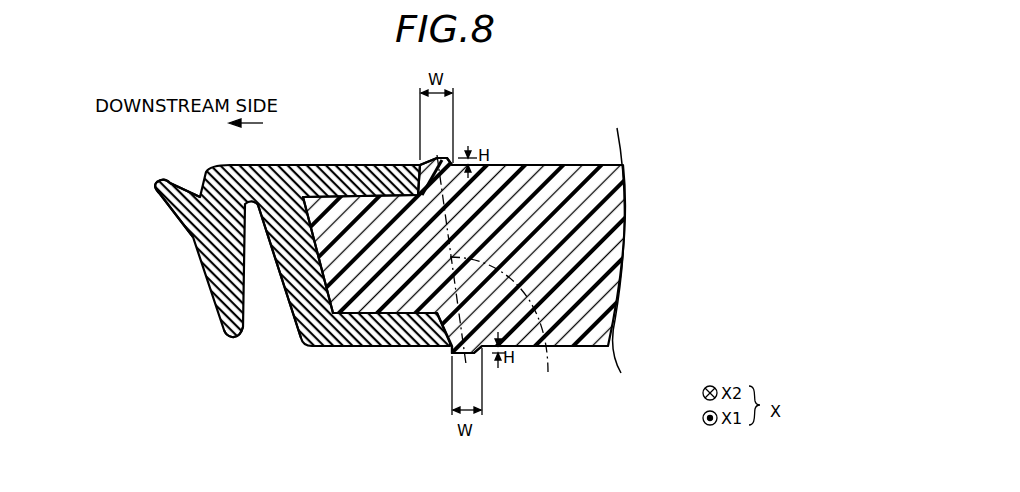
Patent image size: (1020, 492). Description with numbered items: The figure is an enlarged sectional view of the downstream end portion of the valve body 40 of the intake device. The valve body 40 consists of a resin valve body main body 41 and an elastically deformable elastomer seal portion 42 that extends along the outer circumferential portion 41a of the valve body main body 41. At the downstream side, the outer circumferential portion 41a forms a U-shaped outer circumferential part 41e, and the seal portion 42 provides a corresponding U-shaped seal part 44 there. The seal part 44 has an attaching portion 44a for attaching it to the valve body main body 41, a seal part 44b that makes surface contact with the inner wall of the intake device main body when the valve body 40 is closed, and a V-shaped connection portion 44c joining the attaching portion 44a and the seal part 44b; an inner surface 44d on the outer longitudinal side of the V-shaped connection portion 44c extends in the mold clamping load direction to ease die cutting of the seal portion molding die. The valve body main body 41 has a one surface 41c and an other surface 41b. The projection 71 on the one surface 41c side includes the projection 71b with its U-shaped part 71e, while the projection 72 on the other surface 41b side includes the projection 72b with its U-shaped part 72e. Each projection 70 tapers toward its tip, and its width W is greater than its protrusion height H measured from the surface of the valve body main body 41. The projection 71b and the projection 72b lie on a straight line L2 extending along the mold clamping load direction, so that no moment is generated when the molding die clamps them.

The valve body 40 is at (592, 124).
The valve body main body 41 is at (464, 240).
The outer circumferential portion 41a is at (325, 340).
The other surface 41b is at (597, 348).
The one surface 41c is at (528, 165).
The U-shaped outer circumferential part 41e is at (372, 369).
The seal portion 42 is at (325, 148).
The seal part 44 is at (285, 240).
The attaching portion 44a is at (348, 160).
The seal part 44b is at (168, 200).
The V-shaped connection portion 44c is at (277, 328).
The inner surface 44d is at (256, 320).
The projection 70 is at (407, 105).
The projection 71 is at (407, 105).
The projection 71b is at (407, 105).
The U-shaped part 71e is at (418, 160).
The projection 72 is at (393, 390).
The projection 72b is at (393, 390).
The U-shaped part 72e is at (450, 348).
The straight line L2 is at (503, 325).